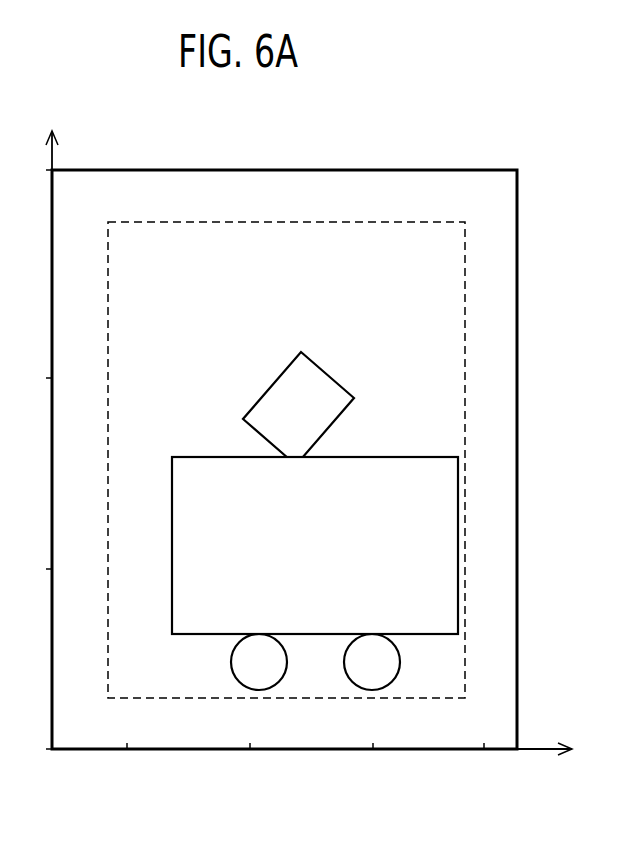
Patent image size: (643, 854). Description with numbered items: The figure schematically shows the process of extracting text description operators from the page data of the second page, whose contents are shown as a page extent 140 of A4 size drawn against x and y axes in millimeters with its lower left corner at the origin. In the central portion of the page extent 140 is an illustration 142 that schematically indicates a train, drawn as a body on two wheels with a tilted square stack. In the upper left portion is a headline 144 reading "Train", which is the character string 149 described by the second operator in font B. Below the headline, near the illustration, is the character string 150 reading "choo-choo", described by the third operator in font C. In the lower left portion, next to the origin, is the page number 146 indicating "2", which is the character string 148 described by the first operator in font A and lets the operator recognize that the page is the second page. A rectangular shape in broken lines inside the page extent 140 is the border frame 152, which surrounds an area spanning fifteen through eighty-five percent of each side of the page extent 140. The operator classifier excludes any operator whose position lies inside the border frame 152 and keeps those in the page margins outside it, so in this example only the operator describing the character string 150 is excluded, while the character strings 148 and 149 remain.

The training image / coordinate system 2 is at (300, 442).
The page extent 140 is at (495, 240).
The border frame 152 is at (465, 316).
The character string 149 is at (137, 186).
The headline 144 is at (117, 205).
The character string 150 is at (181, 360).
The illustration 142 is at (385, 438).
The character string 148 is at (72, 744).
The page number 146 is at (71, 742).